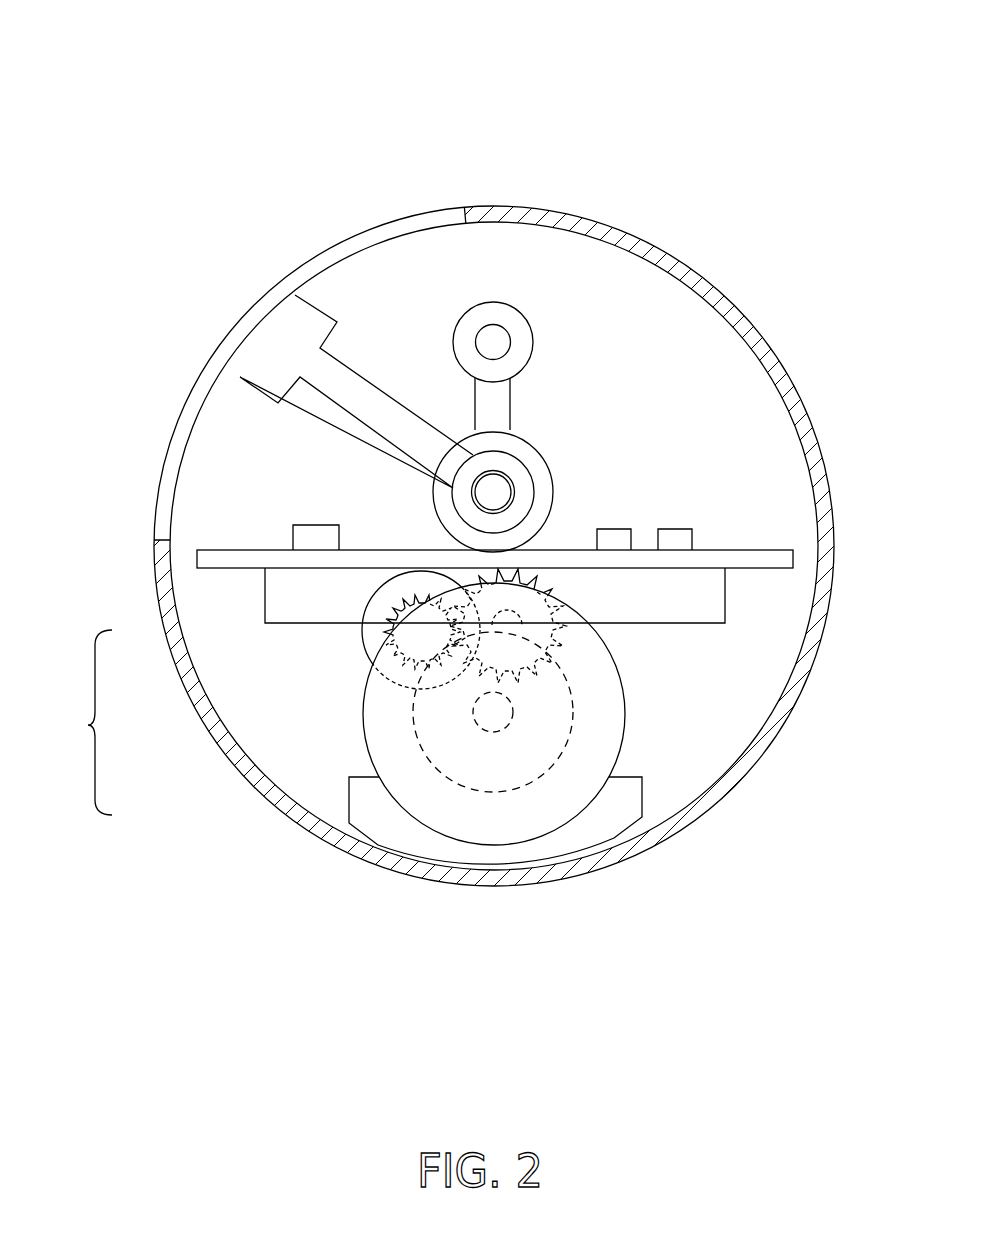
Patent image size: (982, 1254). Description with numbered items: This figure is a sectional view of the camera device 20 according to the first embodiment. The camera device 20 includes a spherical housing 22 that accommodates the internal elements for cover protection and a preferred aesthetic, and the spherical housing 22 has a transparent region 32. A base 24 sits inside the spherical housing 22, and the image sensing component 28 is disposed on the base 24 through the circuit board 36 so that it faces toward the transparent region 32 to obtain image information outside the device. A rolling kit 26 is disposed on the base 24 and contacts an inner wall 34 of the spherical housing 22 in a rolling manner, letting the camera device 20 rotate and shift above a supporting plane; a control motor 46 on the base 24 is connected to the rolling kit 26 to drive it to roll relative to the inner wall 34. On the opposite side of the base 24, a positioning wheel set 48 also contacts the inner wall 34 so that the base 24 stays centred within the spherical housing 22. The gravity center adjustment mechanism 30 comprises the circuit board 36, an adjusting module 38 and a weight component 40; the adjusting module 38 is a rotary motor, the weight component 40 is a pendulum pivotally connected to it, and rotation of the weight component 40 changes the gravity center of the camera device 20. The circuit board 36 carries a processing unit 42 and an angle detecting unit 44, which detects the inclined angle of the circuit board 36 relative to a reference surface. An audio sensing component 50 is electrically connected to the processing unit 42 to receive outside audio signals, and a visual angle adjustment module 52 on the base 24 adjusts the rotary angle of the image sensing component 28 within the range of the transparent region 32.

The camera device 20 is at (688, 107).
The spherical housing 22 is at (552, 217).
The base 24 is at (688, 593).
The rolling kit 26 is at (610, 738).
The image sensing component 28 is at (283, 353).
The gravity center adjustment mechanism 30 is at (88, 725).
The transparent region 32 is at (183, 422).
The inner wall 34 is at (262, 768).
The circuit board 36 is at (758, 557).
The adjusting module 38 is at (372, 635).
The weight component 40 is at (365, 803).
The processing unit 42 is at (612, 537).
The angle detecting unit 44 is at (675, 537).
The control motor 46 is at (488, 772).
The positioning wheel set 48 is at (525, 343).
The audio sensing component 50 is at (318, 537).
The visual angle adjustment module 52 is at (530, 453).